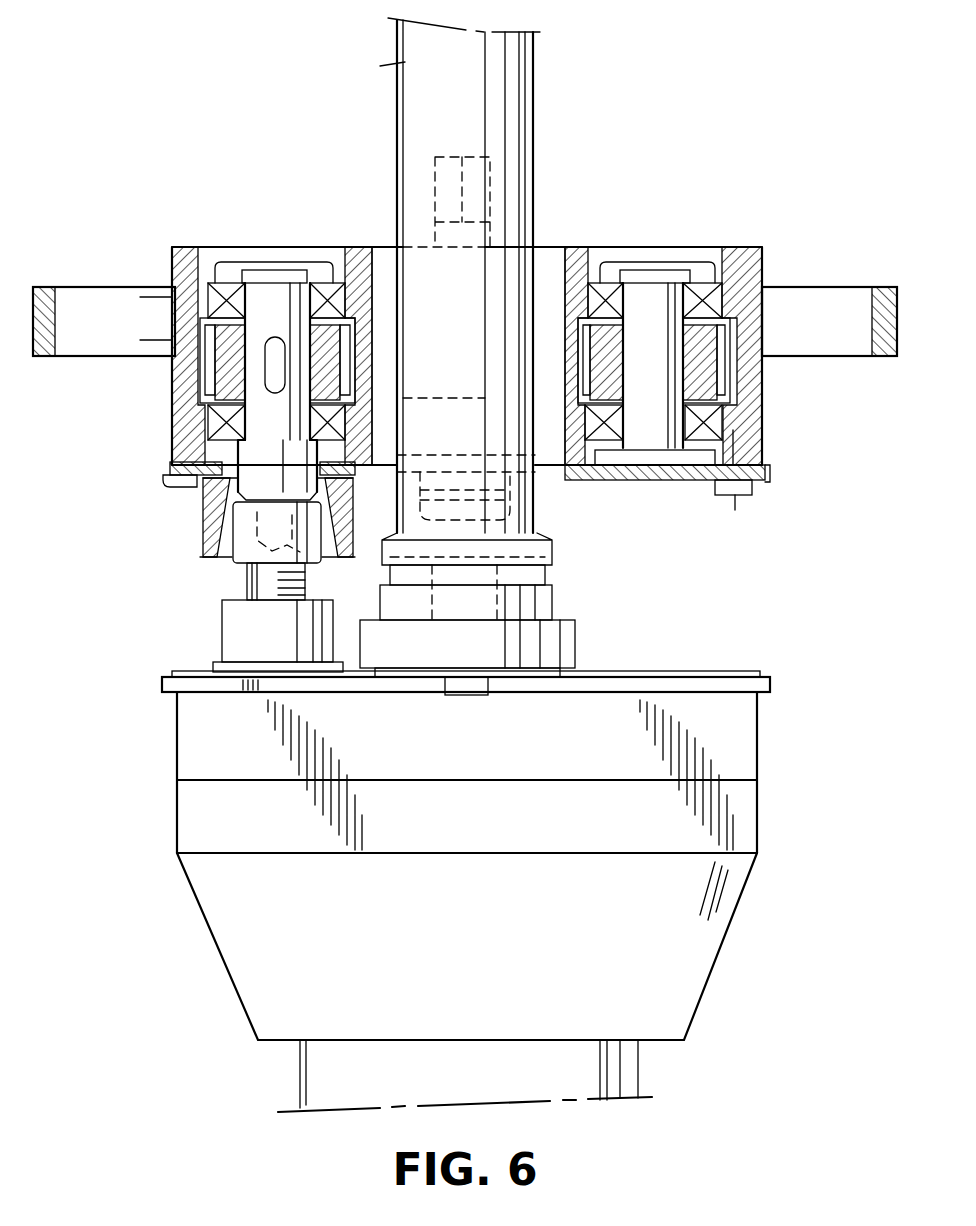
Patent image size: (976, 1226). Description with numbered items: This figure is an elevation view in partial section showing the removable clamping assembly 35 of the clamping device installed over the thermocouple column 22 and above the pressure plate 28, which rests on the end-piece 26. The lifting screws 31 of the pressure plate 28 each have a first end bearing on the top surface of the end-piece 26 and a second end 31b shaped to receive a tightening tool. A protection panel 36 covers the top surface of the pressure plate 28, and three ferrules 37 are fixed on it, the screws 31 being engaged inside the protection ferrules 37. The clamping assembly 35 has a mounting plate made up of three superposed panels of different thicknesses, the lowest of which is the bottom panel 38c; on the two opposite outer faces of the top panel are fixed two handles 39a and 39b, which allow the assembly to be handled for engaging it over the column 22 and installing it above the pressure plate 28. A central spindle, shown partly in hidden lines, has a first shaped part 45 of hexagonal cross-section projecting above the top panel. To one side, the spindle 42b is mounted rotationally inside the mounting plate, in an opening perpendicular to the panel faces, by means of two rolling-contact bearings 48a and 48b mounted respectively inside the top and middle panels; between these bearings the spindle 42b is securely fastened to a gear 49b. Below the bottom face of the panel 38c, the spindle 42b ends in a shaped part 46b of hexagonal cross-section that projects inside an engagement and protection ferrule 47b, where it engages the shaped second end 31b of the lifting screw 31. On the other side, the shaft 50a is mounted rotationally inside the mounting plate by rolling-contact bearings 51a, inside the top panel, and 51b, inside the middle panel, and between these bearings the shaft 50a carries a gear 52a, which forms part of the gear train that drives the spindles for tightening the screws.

The tube 22 is at (405, 62).
The first shaped part 45 is at (445, 160).
The removable clamping assembly 35 is at (597, 225).
The handle 39a is at (48, 287).
The handle 39b is at (875, 287).
The spindle 42b is at (268, 312).
The rolling-contact bearing 48a is at (318, 262).
The rolling-contact bearing 48b is at (175, 428).
The gear 49b is at (325, 358).
The shaft 50a is at (645, 332).
The rolling-contact bearing 51a is at (705, 287).
The gear 52a is at (705, 375).
The bottom panel 38c is at (620, 478).
The rolling-contact bearing 51b is at (700, 478).
The engagement and protection ferrule 47b is at (195, 492).
The shaped part 46b is at (250, 520).
The second end 31b is at (240, 535).
The lifting screw 31 is at (245, 585).
The protection ferrule 37 is at (230, 633).
The protection panel 36 is at (758, 688).
The pressure plate 28 is at (740, 748).
The end-piece 26 is at (745, 838).